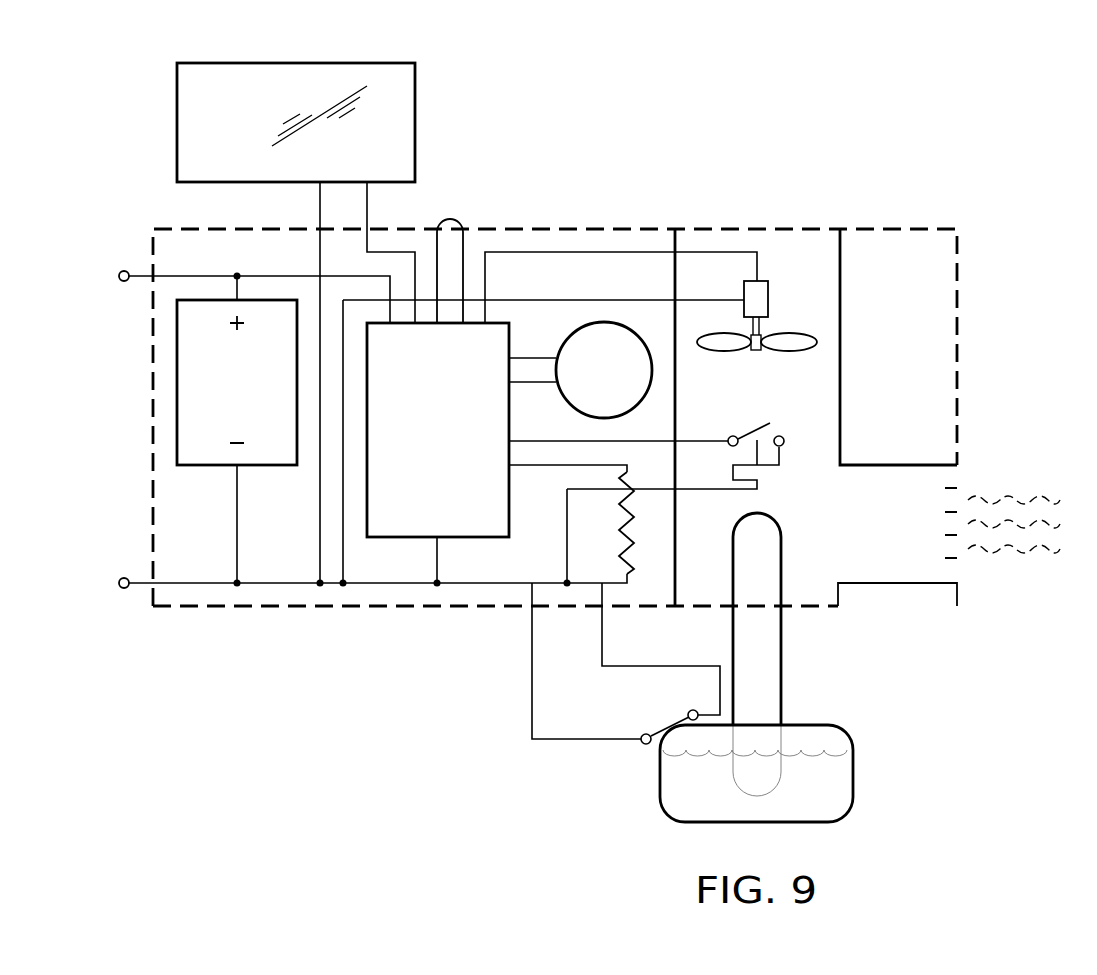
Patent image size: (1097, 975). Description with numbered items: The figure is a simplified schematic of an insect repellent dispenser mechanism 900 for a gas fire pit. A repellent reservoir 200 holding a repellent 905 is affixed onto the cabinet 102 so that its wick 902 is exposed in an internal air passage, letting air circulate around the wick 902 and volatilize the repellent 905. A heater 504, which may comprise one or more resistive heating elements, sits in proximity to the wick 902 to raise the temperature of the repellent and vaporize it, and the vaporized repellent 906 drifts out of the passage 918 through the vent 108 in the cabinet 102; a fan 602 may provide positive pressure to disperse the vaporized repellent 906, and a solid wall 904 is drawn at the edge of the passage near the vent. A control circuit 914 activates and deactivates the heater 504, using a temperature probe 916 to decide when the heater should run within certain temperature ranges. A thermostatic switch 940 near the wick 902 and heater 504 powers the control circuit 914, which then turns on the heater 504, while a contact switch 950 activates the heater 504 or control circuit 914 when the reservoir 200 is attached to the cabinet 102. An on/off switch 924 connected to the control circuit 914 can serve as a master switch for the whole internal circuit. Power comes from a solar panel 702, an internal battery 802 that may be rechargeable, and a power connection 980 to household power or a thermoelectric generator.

The solar panel 702 is at (295, 62).
The insect repellent dispenser mechanism 900 is at (878, 82).
The passage 918 is at (776, 226).
The cabinet 102 is at (958, 265).
The on/off switch 924 is at (450, 216).
The power connection 980 is at (116, 273).
The internal battery 802 is at (260, 400).
The control circuit 914 is at (460, 452).
The temperature probe 916 is at (627, 385).
The fan 602 is at (787, 340).
The thermostatic switch 940 is at (748, 426).
The baffle 904 is at (897, 470).
The vaporized repellent 906 is at (1035, 497).
The vent 108 is at (950, 563).
The wick 902 is at (782, 548).
The heater 504 is at (633, 542).
The contact switch 950 is at (648, 734).
The repellent reservoir 200 is at (853, 772).
The repellent 905 is at (662, 785).